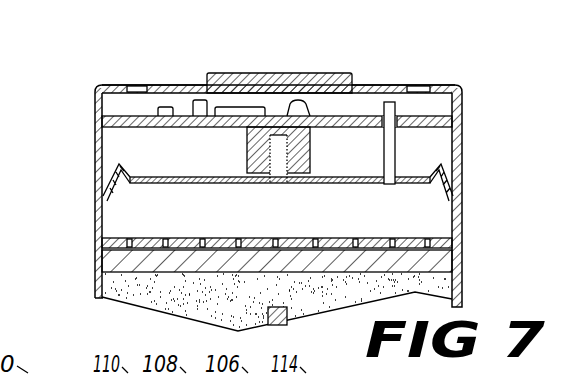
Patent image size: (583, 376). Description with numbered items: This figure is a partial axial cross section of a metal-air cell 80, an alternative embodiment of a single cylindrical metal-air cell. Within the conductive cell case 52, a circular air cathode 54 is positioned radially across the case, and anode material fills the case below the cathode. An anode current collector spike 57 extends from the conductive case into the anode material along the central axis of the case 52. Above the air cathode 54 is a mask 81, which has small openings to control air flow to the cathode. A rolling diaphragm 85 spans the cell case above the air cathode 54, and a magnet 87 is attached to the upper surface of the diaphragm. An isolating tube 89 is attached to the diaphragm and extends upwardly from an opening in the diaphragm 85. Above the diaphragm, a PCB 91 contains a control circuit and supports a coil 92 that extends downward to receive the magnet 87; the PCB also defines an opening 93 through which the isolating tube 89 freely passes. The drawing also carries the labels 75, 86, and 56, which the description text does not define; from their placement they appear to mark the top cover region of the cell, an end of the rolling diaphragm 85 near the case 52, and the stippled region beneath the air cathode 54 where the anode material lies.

The metal-air cell 80 is at (116, 66).
The cell case 52 is at (95, 282).
The cover cap 75 is at (421, 90).
The PCB 91 is at (432, 127).
The opening 93 is at (373, 116).
The coil 92 is at (248, 162).
The magnet 87 is at (278, 183).
The rolling diaphragm 85 is at (172, 182).
The crimped tray end 86 is at (120, 165).
The isolating tube 89 is at (384, 160).
The mask 81 is at (412, 238).
The air cathode 54 is at (440, 262).
The potting compound 56 is at (155, 297).
The anode current collector spike 57 is at (268, 312).